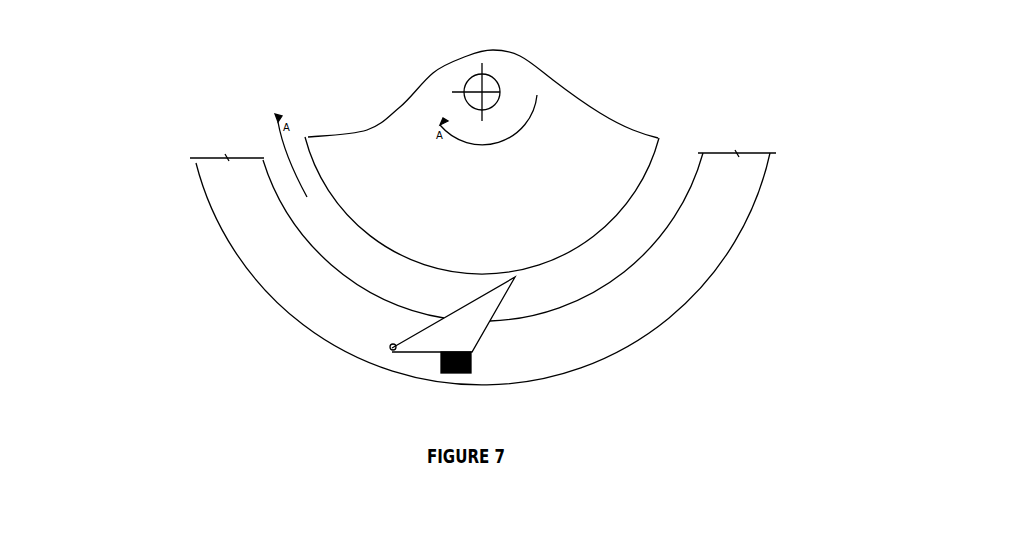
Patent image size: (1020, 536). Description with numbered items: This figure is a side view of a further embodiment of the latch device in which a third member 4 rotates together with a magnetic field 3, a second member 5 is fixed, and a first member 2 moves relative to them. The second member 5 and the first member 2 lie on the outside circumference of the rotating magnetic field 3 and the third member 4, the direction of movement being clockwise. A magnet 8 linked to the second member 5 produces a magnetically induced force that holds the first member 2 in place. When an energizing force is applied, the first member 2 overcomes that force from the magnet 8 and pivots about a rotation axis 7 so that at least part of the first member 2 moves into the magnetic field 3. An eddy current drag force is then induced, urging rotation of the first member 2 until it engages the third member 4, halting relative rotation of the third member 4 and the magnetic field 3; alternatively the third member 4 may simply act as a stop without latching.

The first member 2 is at (500, 92).
The magnetic field 3 is at (290, 187).
The third member 4 is at (308, 137).
The second member 5 is at (268, 273).
The rotation axis 7 is at (391, 349).
The magnet 8 is at (471, 362).